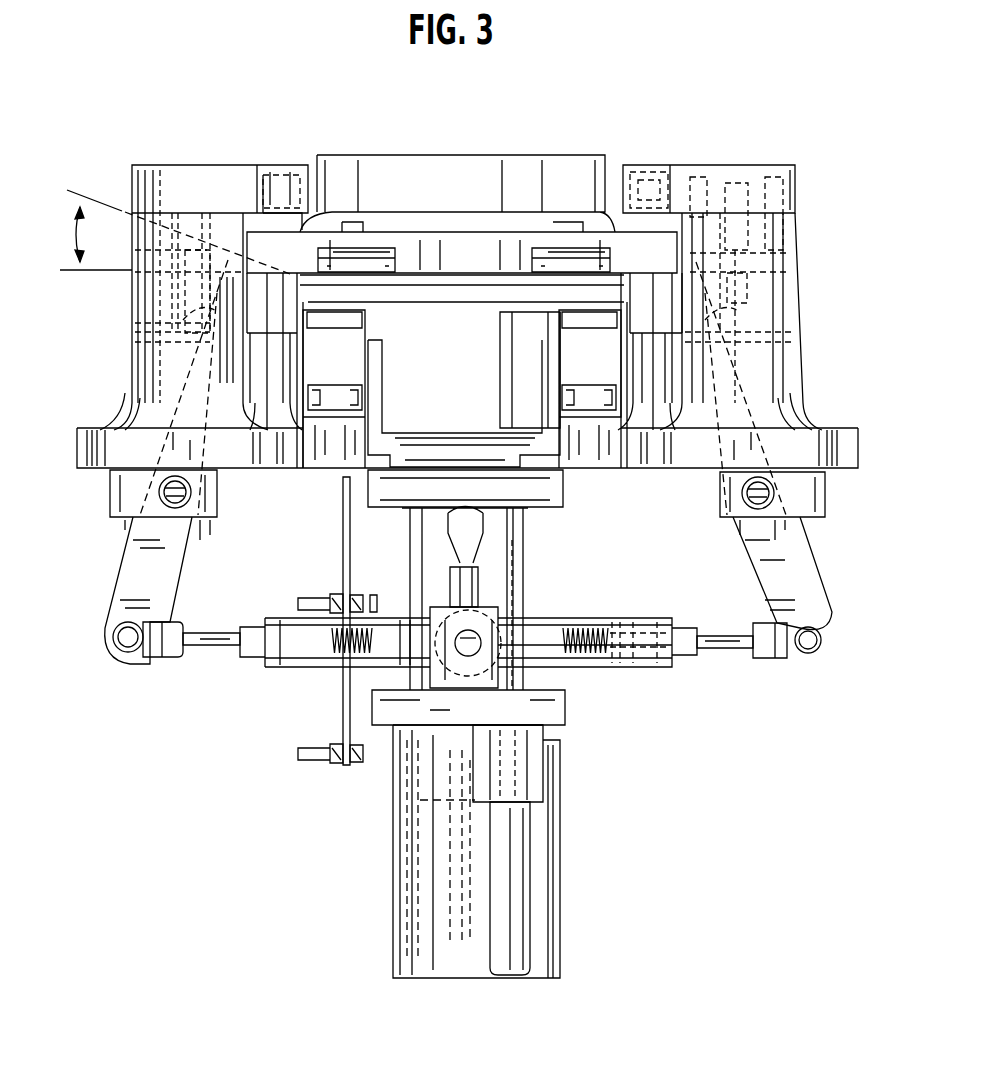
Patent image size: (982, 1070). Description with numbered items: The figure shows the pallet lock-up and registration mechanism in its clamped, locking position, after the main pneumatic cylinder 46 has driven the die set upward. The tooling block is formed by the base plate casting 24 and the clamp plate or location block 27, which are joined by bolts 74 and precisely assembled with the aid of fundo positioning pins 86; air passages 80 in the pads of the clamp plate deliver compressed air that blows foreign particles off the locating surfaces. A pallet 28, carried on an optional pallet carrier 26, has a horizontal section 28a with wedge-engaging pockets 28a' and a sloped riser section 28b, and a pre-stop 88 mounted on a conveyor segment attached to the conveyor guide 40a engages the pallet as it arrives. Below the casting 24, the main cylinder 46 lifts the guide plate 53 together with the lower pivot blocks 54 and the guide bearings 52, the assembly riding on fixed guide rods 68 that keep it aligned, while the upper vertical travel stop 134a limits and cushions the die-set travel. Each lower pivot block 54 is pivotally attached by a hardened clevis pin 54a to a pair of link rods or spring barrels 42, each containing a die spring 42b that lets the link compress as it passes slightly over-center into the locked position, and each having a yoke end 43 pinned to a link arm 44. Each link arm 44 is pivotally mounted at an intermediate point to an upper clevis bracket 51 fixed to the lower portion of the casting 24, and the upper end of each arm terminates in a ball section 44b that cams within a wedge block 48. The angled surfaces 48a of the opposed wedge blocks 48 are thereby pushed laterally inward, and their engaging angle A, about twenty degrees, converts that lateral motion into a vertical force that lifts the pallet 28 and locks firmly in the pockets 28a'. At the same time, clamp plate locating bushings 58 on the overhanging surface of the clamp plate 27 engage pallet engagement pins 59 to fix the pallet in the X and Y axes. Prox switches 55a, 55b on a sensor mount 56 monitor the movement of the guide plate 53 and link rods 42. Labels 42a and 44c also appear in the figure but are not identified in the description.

The base plate casting 24 is at (802, 281).
The pallet carrier 26 is at (445, 300).
The clamp plate or location block 27 is at (797, 199).
The pallet 28 is at (467, 155).
The horizontal section 28a is at (464, 188).
The wedge-engaging pockets 28a' is at (478, 169).
The sloped riser section 28b is at (447, 198).
The conveyor guide 40a is at (362, 400).
The link rod or spring barrel 42 is at (275, 667).
The rod end 42a is at (797, 655).
The die spring 42b is at (600, 670).
The yoke end 43 is at (773, 660).
The link arm 44 is at (136, 593).
The ball section 44b is at (150, 325).
The pivot pin 44c is at (770, 500).
The main pneumatic cylinder 46 is at (563, 905).
The wedge block 48 is at (215, 260).
The angled surfaces 48a is at (244, 225).
The upper clevis bracket 51 is at (108, 490).
The guide bearing 52 is at (548, 775).
The guide plate 53 is at (566, 718).
The lower pivot block 54 is at (430, 607).
The hardened clevis pin 54a is at (472, 648).
The prox switch 55a is at (305, 752).
The prox switch 55b is at (302, 602).
The sensor mount 56 is at (343, 548).
The clamp plate locating bushing 58 is at (659, 172).
The pallet engagement pin 59 is at (292, 222).
The guide rod 68 is at (491, 906).
The bolt 74 is at (699, 175).
The air passage 80 is at (758, 198).
The fundo positioning pin 86 is at (740, 175).
The pre-stop 88 is at (507, 391).
The upper vertical travel stop 134a is at (476, 532).
The engaging angle A is at (175, 232).